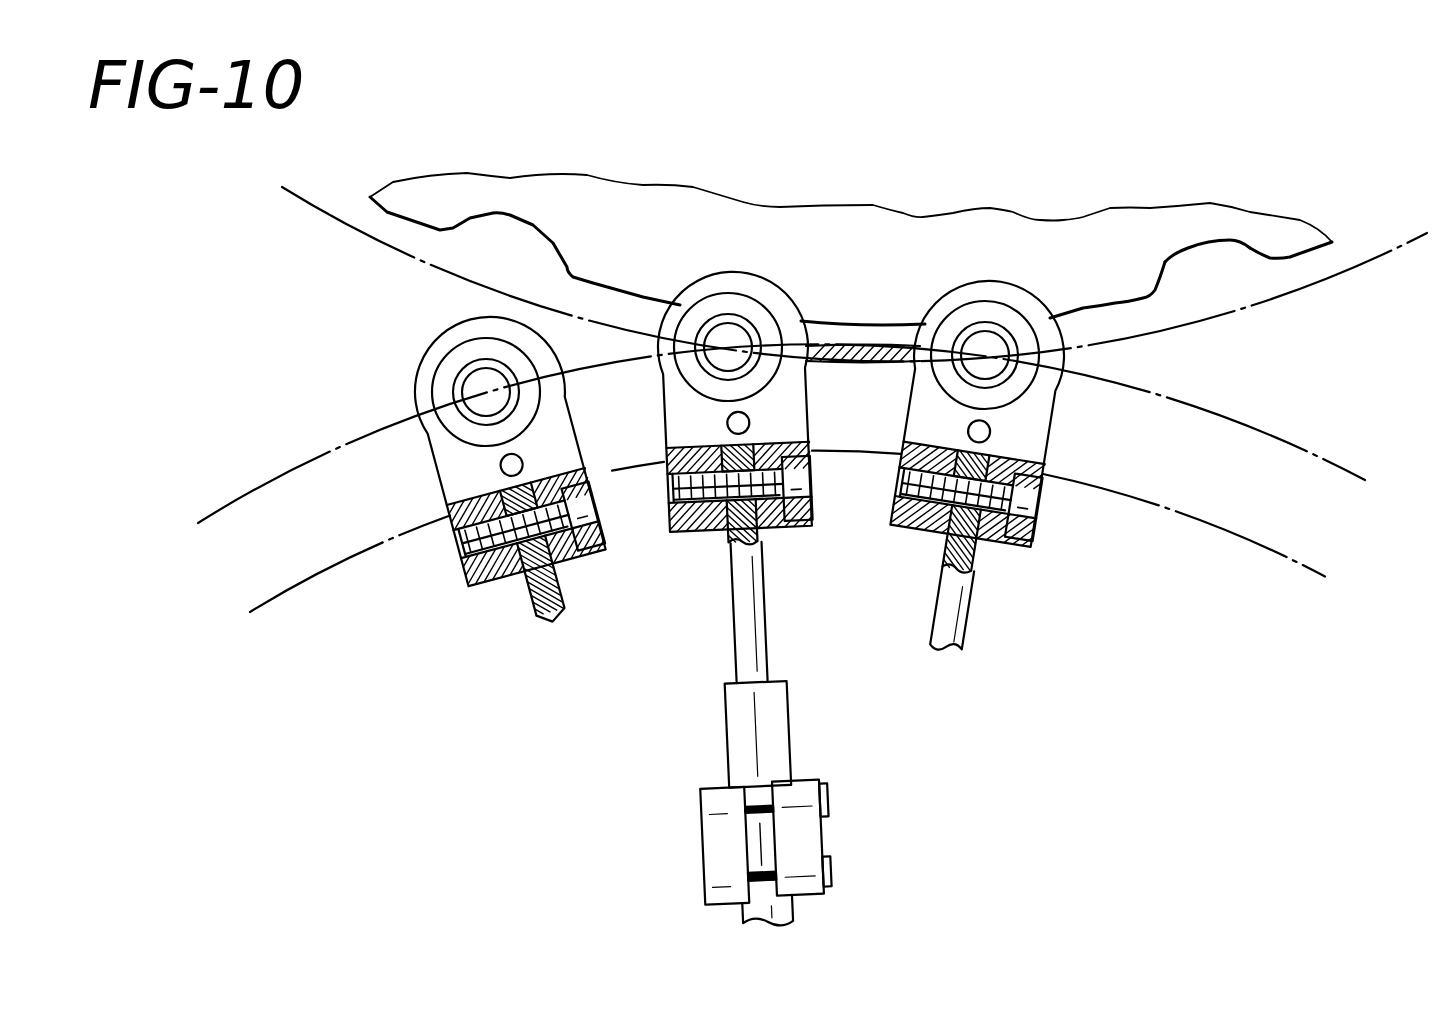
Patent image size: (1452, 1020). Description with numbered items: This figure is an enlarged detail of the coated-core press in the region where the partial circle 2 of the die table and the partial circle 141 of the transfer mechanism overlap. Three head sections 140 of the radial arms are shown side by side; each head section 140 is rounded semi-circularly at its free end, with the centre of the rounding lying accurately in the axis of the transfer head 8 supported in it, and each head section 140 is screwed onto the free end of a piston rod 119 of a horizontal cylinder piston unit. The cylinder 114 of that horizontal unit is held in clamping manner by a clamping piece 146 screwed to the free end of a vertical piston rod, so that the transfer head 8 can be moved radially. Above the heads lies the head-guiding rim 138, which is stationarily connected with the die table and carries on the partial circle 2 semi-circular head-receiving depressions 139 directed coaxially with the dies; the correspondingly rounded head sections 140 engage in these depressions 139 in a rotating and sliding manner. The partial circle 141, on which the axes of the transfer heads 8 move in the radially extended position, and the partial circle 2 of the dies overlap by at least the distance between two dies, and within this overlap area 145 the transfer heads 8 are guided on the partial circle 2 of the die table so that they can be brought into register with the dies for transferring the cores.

The partial circle 2 is at (1385, 262).
The transfer head 8 is at (705, 370).
The cylinder 114 is at (777, 723).
The piston rod 119 is at (760, 608).
The head-guiding rim 138 is at (1152, 234).
The head-receiving depression 139 is at (1197, 257).
The head section 140 is at (922, 411).
The partial circle 141 is at (1310, 450).
The overlap area 145 is at (857, 343).
The clamping piece 146 is at (820, 848).